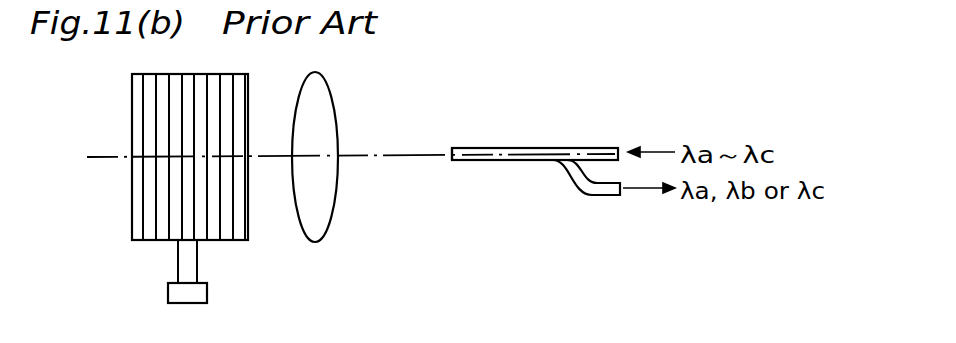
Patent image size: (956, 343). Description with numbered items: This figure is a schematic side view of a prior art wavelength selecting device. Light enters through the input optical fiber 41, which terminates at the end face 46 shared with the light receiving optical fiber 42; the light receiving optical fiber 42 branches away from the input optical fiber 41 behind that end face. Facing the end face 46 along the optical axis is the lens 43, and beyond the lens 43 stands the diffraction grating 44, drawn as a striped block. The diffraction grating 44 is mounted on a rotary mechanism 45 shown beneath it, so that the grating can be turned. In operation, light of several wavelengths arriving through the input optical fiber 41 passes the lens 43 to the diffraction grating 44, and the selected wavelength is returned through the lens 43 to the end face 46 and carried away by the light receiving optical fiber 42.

The input optical fiber 41 is at (599, 148).
The light receiving optical fiber 42 is at (600, 190).
The lens 43 is at (320, 98).
The diffraction grating 44 is at (222, 74).
The rotary mechanism 45 is at (207, 293).
The end face of the optical fibers 46 is at (452, 155).